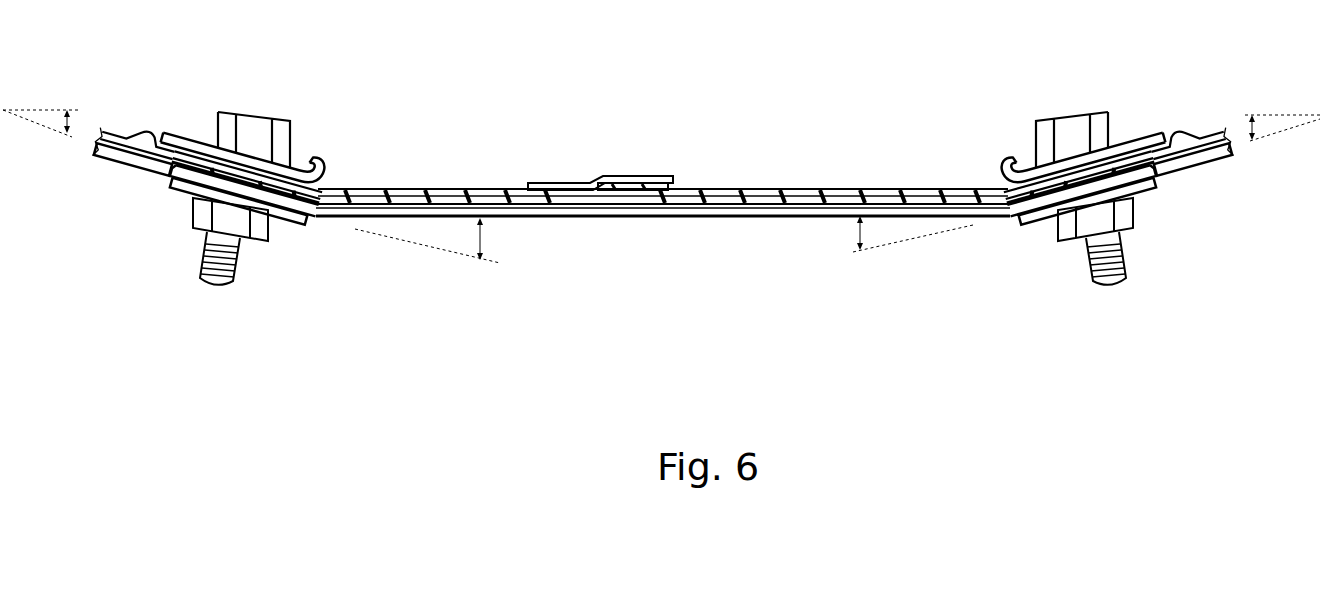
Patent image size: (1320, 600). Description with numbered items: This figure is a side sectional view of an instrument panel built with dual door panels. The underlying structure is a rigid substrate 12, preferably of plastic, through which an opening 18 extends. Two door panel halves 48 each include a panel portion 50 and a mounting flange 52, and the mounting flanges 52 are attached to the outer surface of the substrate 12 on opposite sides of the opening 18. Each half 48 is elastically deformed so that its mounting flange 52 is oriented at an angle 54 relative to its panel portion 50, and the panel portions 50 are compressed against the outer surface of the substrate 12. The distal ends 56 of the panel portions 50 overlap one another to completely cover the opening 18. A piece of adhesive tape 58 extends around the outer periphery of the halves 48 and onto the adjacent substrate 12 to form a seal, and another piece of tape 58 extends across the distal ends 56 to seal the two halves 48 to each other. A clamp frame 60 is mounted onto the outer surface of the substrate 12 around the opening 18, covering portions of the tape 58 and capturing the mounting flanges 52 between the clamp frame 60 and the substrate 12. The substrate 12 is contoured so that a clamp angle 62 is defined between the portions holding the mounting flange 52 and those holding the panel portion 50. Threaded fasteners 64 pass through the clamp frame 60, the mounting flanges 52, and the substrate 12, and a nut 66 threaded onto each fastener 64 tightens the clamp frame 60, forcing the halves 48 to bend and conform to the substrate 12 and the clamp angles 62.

The substrate 12 is at (1215, 162).
The opening 18 is at (750, 212).
The door panel halves 48 is at (414, 183).
The panel portion 50 is at (457, 190).
The mounting flange 52 is at (192, 162).
The angle 54 is at (482, 238).
The distal ends 56 is at (612, 178).
The adhesive tape 58 is at (127, 137).
The clamp frame 60 is at (180, 137).
The clamp angle 62 is at (68, 121).
The threaded fastener 64 is at (253, 130).
The nut 66 is at (202, 217).